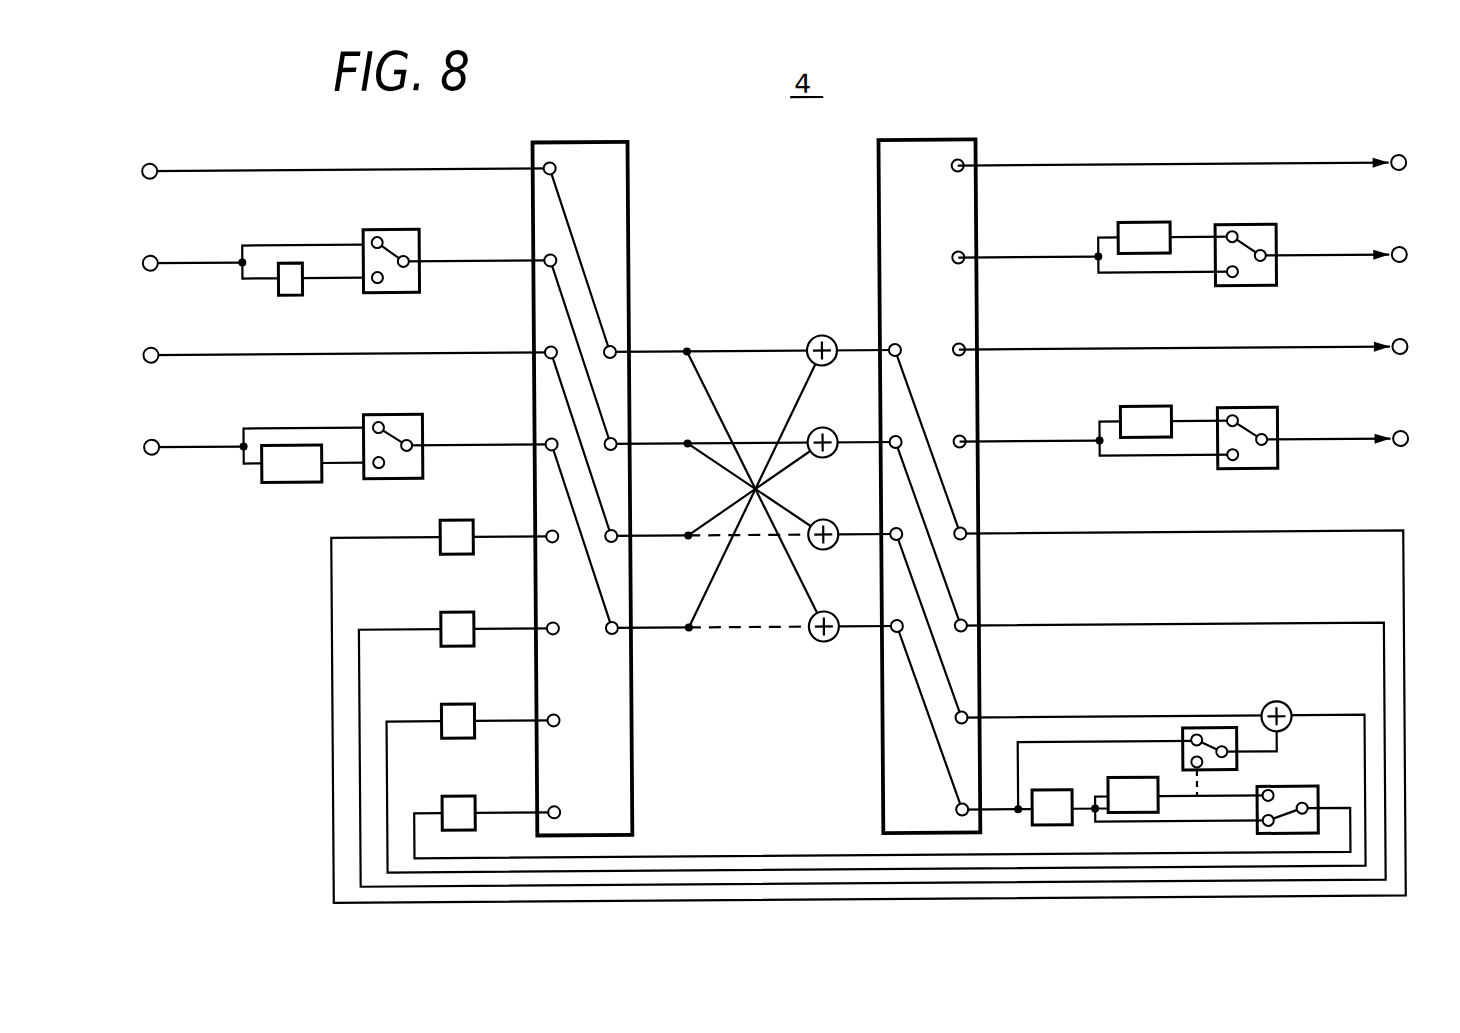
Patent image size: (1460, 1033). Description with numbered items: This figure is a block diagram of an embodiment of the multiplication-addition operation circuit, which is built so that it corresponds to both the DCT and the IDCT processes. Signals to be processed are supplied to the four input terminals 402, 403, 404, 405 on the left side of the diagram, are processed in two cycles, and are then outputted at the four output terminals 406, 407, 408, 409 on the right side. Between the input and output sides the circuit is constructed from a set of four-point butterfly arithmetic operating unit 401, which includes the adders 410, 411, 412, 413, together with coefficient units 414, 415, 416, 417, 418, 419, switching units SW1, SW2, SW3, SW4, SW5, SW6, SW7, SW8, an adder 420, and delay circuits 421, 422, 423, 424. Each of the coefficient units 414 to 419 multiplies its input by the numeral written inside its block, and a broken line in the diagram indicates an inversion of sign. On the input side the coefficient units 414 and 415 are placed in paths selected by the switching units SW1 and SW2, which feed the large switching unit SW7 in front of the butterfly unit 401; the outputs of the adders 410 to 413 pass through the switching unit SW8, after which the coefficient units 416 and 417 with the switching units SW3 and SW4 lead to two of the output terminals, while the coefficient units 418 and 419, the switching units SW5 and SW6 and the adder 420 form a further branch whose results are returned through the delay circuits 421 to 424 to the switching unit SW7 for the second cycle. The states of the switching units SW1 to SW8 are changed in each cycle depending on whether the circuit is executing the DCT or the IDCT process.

The 4-point butterfly arithmetic operating unit 401 is at (767, 485).
The terminal 402 is at (156, 160).
The terminal 403 is at (156, 252).
The terminal 404 is at (156, 344).
The terminal 405 is at (156, 436).
The terminal 406 is at (1404, 160).
The terminal 407 is at (1404, 252).
The terminal 408 is at (1404, 344).
The terminal 409 is at (1404, 436).
The adder 410 is at (812, 364).
The adder 411 is at (823, 458).
The adder 412 is at (825, 550).
The adder 413 is at (818, 641).
The coefficient unit 414 is at (293, 292).
The coefficient unit 415 is at (285, 481).
The coefficient unit 416 is at (1142, 225).
The coefficient unit 417 is at (1140, 409).
The coefficient unit 418 is at (1050, 792).
The coefficient unit 419 is at (1133, 815).
The adder 420 is at (1287, 709).
The delay circuit 421 is at (440, 519).
The delay circuit 422 is at (446, 611).
The delay circuit 423 is at (441, 703).
The delay circuit 424 is at (442, 800).
The switching unit SW1 is at (392, 227).
The switching unit SW2 is at (402, 412).
The switching unit SW3 is at (1245, 228).
The switching unit SW4 is at (1245, 411).
The switching unit SW5 is at (1203, 731).
The switching unit SW6 is at (1300, 837).
The switching unit SW7 is at (613, 141).
The switching unit SW8 is at (955, 141).